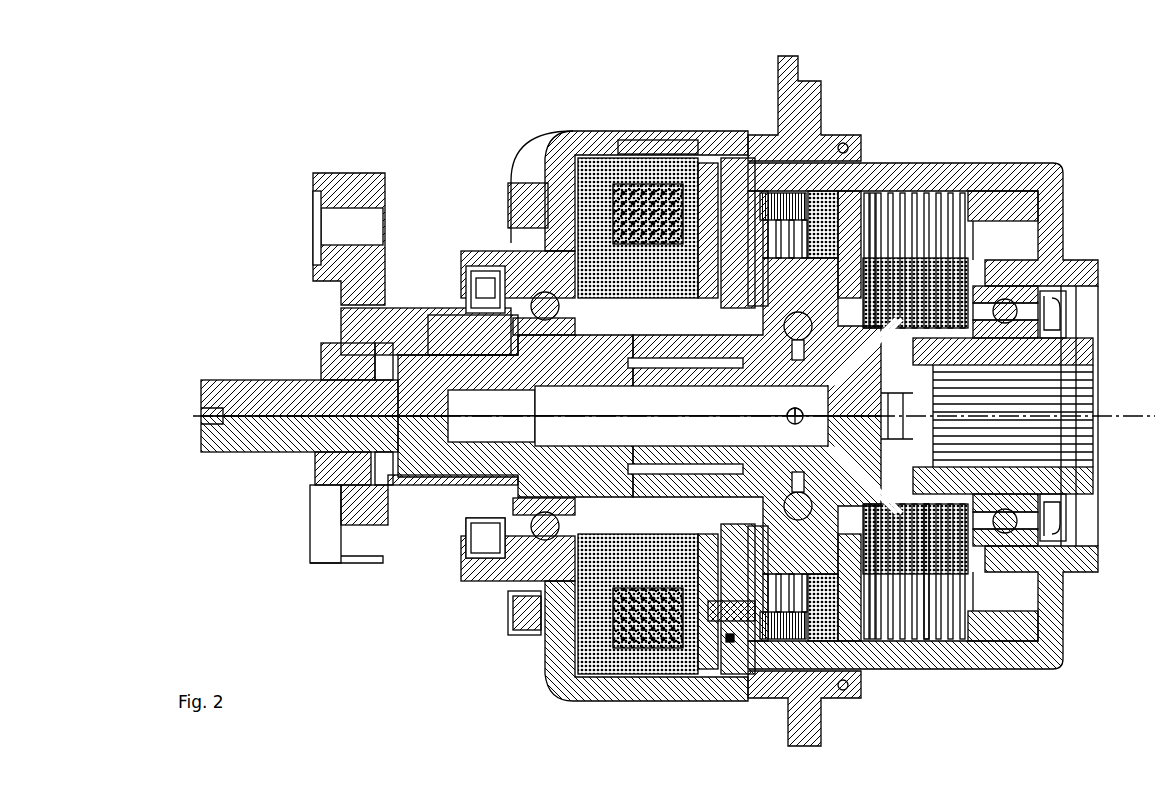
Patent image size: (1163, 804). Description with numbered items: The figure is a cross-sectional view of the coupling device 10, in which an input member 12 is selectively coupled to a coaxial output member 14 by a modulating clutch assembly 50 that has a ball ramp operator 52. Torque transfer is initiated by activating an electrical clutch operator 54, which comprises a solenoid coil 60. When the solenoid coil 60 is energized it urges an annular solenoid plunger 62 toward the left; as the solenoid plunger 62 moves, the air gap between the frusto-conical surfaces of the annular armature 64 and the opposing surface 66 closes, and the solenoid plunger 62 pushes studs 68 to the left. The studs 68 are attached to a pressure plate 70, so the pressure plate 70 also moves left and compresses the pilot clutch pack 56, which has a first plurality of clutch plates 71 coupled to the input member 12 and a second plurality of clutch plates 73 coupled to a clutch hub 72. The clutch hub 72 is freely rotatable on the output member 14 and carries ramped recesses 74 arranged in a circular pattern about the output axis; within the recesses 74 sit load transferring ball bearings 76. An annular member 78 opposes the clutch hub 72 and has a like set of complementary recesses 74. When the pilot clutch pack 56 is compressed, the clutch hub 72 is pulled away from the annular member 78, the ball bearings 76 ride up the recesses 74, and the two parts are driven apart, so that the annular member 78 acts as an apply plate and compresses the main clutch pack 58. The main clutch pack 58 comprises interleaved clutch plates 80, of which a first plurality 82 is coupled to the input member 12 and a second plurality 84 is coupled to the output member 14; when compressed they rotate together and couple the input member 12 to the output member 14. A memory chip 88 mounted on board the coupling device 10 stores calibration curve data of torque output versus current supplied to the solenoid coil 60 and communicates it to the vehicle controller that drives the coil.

The coupling device 10 is at (603, 78).
The input member 12 is at (255, 378).
The output member 14 is at (1070, 345).
The modulating clutch assembly 50 is at (907, 128).
The ball ramp operator 52 is at (790, 360).
The electrical clutch operator 54 is at (600, 135).
The pilot clutch pack 56 is at (785, 195).
The main clutch pack 58 is at (925, 200).
The solenoid coil 60 is at (630, 190).
The solenoid plunger 62 is at (613, 560).
The armature 64 is at (700, 180).
The frusto-conical surface 66 is at (700, 270).
The studs 68 is at (720, 640).
The pressure plate 70 is at (805, 205).
The first plurality of clutch plates 71 is at (745, 180).
The clutch hub 72 is at (745, 310).
The second plurality of clutch plates 73 is at (720, 300).
The ramped recesses 74 is at (805, 320).
The ball bearings 76 is at (845, 283).
The annular member 78 is at (835, 268).
The interleaved clutch plates 80 is at (930, 225).
The first plurality of clutch plates 82 is at (915, 600).
The second plurality of clutch plates 84 is at (1019, 312).
The memory chip 88 is at (665, 132).